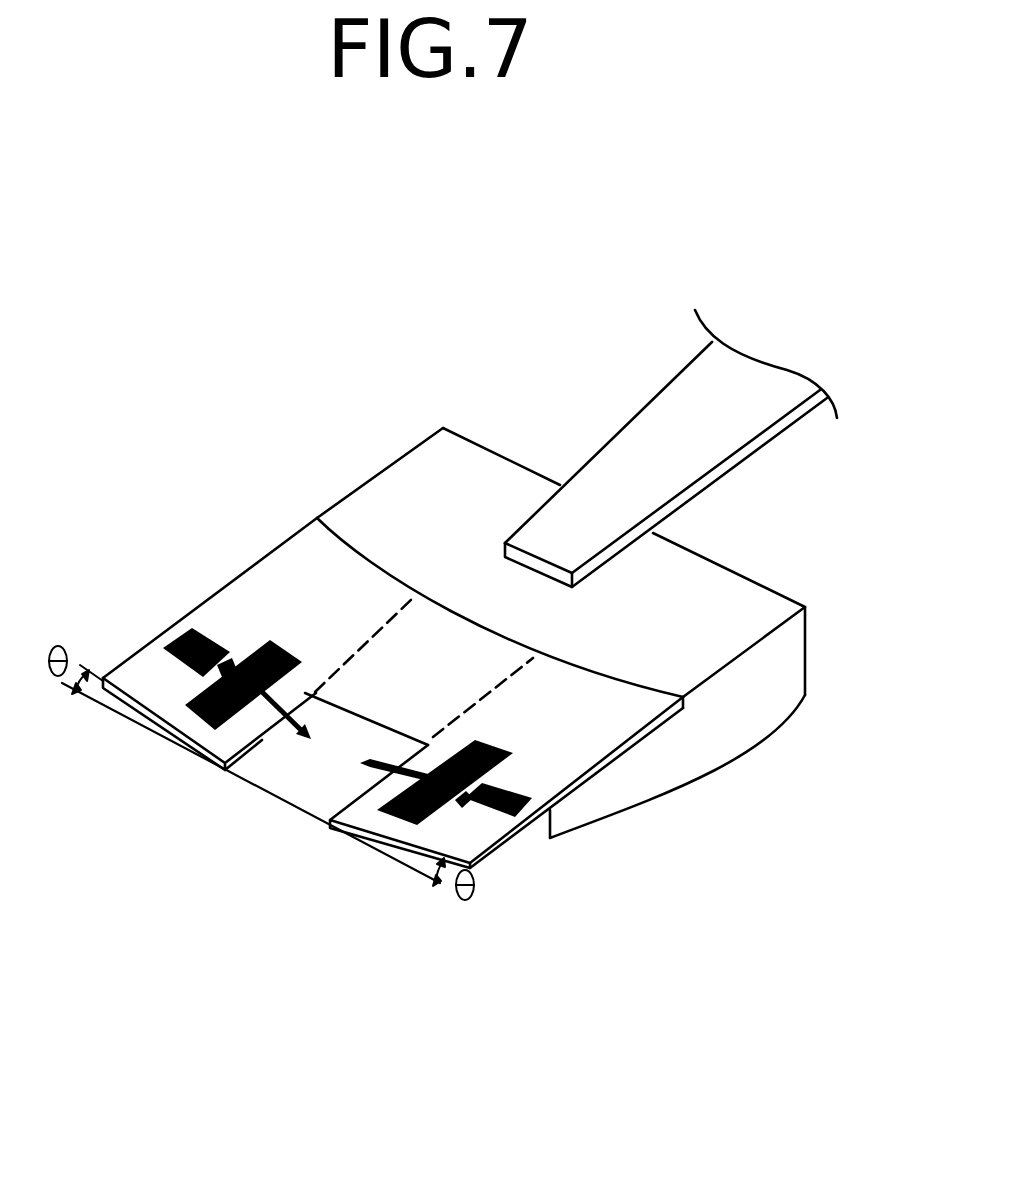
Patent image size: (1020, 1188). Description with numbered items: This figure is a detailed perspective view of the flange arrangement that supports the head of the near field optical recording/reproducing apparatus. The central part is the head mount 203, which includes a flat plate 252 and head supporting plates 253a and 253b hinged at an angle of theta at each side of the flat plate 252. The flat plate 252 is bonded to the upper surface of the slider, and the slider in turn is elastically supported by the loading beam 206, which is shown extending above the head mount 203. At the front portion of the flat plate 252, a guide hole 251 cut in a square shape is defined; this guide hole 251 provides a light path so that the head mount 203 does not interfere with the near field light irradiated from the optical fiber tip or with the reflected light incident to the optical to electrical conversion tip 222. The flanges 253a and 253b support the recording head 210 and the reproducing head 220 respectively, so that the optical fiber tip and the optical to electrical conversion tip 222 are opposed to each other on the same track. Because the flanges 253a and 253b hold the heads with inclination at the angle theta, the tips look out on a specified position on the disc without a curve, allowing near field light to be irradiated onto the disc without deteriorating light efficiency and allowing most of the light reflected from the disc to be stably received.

The head mount 203 is at (213, 472).
The loading beam 206 is at (720, 423).
The recording head 210 is at (510, 813).
The reproducing head 220 is at (192, 627).
The optical to electrical conversion tip 222 is at (307, 740).
The guide hole 251 is at (260, 740).
The flat plate 252 is at (422, 630).
The head supporting plate 253a is at (308, 537).
The head supporting plate 253b is at (635, 708).